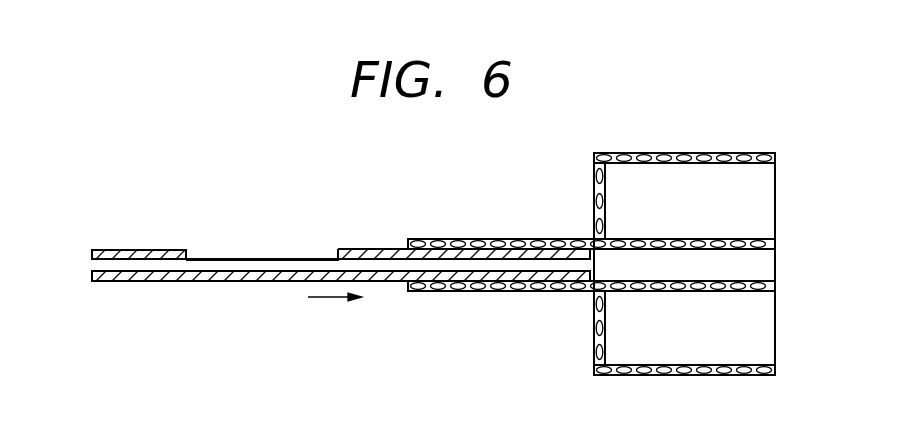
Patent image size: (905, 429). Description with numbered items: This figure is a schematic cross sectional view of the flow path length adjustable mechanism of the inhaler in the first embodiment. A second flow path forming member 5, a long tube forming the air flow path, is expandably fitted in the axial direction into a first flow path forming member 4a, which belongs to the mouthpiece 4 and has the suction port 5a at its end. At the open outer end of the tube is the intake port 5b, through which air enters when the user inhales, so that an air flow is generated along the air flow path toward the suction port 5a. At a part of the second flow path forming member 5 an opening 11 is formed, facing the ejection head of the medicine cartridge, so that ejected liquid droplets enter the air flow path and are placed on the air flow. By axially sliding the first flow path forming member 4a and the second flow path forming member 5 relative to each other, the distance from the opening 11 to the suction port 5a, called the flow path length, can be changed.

The mouthpiece 4 is at (676, 146).
The first flow path forming member 4a is at (474, 293).
The second flow path forming member 5 is at (254, 292).
The suction port 5a is at (764, 265).
The intake port 5b is at (92, 270).
The opening 11 is at (280, 256).